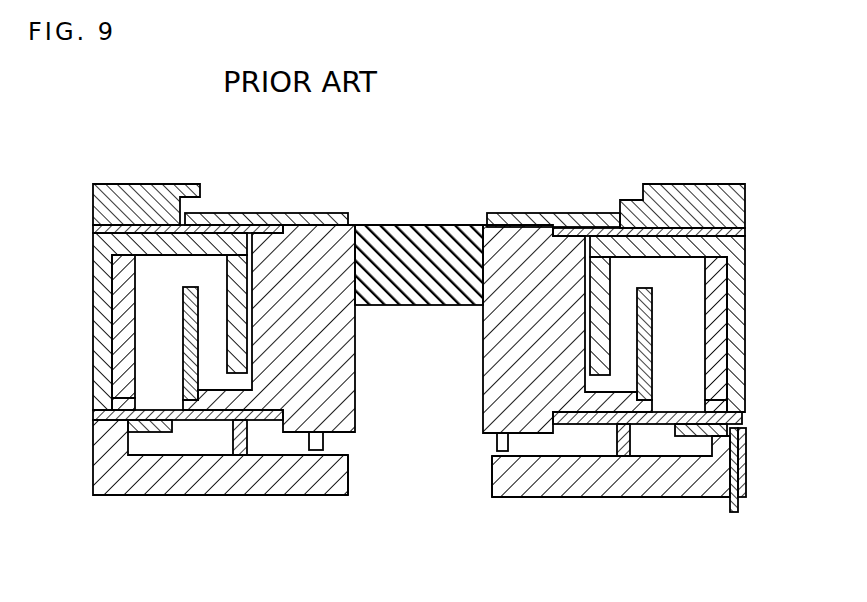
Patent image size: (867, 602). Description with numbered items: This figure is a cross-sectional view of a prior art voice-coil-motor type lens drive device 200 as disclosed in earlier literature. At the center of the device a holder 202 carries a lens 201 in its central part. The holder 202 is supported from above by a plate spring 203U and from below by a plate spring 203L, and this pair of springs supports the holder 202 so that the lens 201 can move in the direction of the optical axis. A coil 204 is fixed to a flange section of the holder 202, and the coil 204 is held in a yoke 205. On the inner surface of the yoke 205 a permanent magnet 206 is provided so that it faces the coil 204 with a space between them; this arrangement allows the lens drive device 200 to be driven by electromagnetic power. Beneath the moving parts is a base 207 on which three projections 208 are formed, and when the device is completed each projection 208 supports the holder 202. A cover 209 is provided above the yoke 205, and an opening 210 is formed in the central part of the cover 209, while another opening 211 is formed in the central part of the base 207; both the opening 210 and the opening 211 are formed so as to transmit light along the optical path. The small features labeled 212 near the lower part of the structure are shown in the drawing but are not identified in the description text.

The lens drive device 200 is at (659, 103).
The lens 201 is at (378, 224).
The holder 202 is at (529, 237).
The plate spring 203U is at (94, 230).
The plate spring 203L is at (96, 414).
The coil 204 is at (190, 297).
The yoke 205 is at (112, 258).
The permanent magnet 206 is at (120, 333).
The base 207 is at (101, 472).
The projection 208 is at (243, 452).
The cover 209 is at (142, 190).
The opening 210 is at (432, 212).
The opening 211 is at (418, 474).
The projection 212 is at (323, 442).